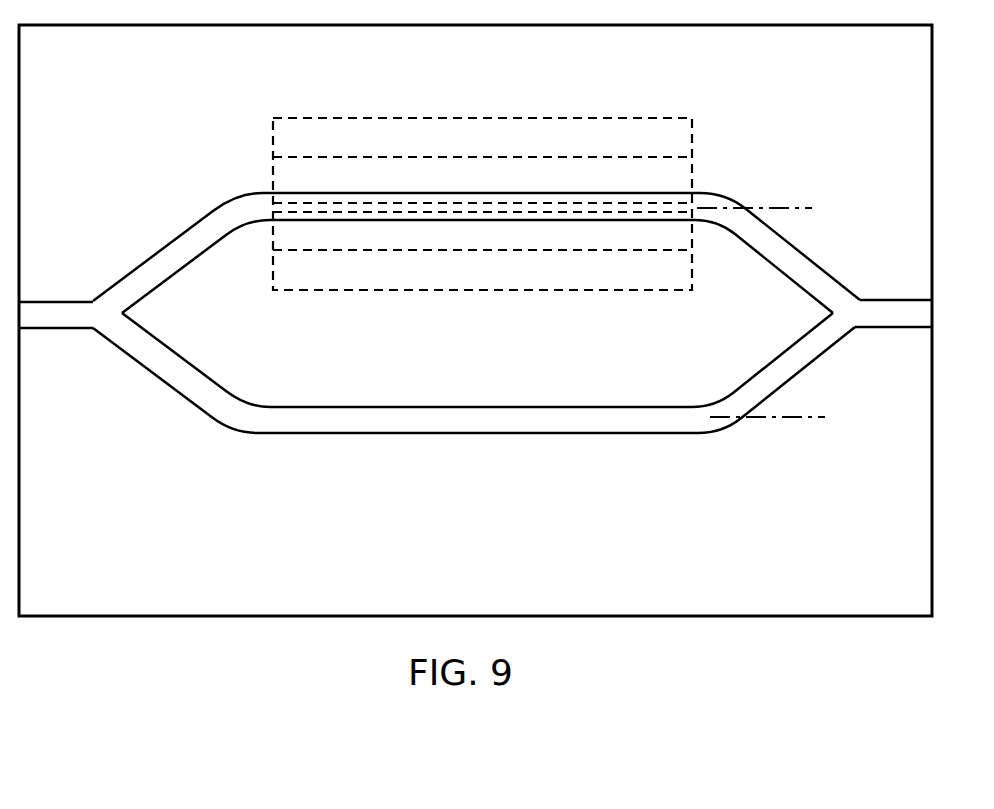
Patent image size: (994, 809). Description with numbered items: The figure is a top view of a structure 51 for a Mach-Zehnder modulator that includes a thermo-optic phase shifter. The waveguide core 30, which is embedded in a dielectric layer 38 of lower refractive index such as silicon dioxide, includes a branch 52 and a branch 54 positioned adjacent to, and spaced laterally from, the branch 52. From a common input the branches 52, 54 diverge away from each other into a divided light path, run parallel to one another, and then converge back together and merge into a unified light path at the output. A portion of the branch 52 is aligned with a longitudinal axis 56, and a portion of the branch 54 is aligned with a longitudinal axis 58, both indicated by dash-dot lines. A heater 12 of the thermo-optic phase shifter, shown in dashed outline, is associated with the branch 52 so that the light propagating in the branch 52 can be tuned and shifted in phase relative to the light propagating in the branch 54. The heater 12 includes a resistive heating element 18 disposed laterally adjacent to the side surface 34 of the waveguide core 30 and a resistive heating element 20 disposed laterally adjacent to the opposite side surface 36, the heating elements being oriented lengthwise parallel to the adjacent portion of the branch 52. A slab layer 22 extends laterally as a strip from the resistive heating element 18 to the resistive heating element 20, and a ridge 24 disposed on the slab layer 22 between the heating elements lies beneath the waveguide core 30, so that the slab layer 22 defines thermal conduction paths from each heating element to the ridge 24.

The heater 12 is at (486, 166).
The resistive heating element 18 is at (288, 143).
The resistive heating element 20 is at (316, 280).
The slab layer 22 is at (430, 176).
The ridge 24 is at (546, 207).
The waveguide core 30 is at (475, 239).
The side surface 34 is at (615, 191).
The side surface 36 is at (592, 222).
The dielectric layer 38 is at (101, 542).
The structure 51 is at (475, 273).
The branch 52 is at (475, 199).
The branch 54 is at (228, 405).
The longitudinal axis 56 is at (767, 208).
The longitudinal axis 58 is at (773, 418).